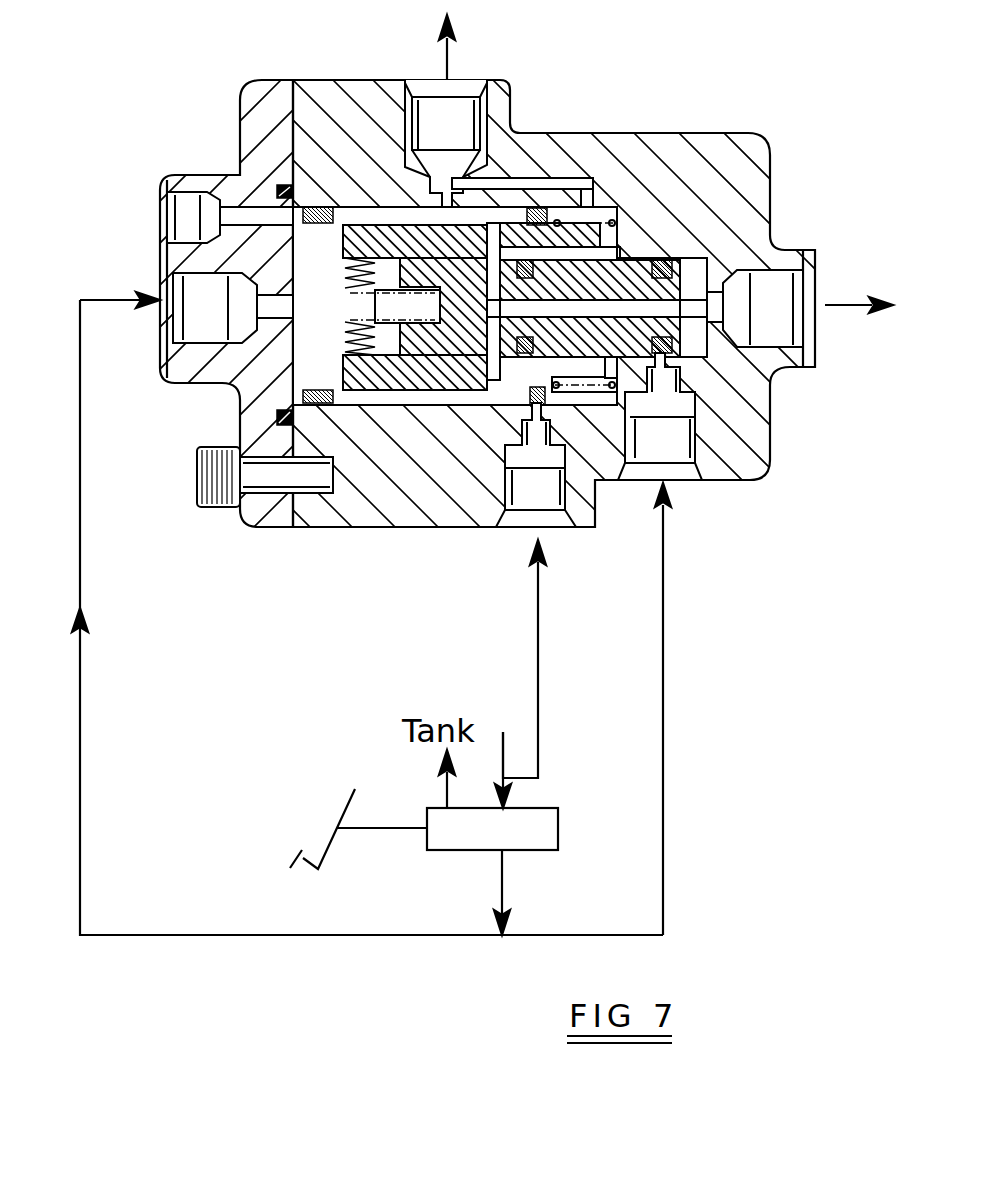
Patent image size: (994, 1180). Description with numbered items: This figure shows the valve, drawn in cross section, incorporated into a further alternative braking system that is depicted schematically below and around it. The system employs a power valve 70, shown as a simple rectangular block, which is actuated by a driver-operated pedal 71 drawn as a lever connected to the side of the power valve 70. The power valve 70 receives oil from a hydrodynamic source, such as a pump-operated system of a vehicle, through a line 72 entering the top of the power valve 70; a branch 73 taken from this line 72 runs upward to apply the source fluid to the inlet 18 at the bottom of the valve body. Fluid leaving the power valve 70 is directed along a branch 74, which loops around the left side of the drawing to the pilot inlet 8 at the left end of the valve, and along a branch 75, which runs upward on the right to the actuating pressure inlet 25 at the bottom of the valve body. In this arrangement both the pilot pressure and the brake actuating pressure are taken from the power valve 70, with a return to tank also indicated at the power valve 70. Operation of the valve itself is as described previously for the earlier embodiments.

The pilot inlet 8 is at (193, 297).
The inlet 18 is at (547, 490).
The actuating pressure inlet 25 is at (677, 445).
The power valve 70 is at (550, 837).
The driver-operated pedal 71 is at (323, 845).
The line 72 is at (503, 800).
The branch 73 is at (537, 693).
The branch 74 is at (82, 707).
The branch 75 is at (665, 710).